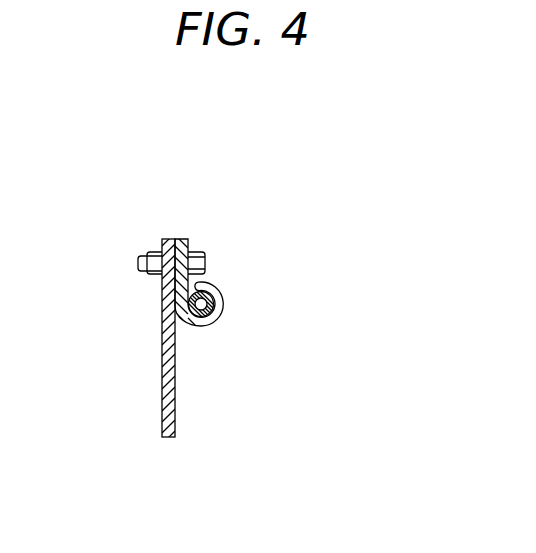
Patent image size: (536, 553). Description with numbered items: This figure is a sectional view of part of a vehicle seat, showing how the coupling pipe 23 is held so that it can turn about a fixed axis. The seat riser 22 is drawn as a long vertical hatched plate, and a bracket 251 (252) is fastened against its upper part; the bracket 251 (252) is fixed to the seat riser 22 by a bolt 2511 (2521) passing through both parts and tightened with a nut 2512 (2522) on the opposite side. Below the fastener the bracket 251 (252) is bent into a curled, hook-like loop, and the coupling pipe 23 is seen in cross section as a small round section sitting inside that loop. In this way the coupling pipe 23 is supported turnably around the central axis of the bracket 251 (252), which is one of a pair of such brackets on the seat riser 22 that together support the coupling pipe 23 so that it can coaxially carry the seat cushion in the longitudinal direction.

The seat riser 22 is at (176, 375).
The bracket 251 is at (272, 294).
The bracket 252 is at (215, 319).
The coupling pipe 23 is at (213, 297).
The nut 2512 is at (153, 230).
The nut 2522 is at (154, 252).
The bolt 2511 is at (296, 252).
The bolt 2521 is at (207, 260).